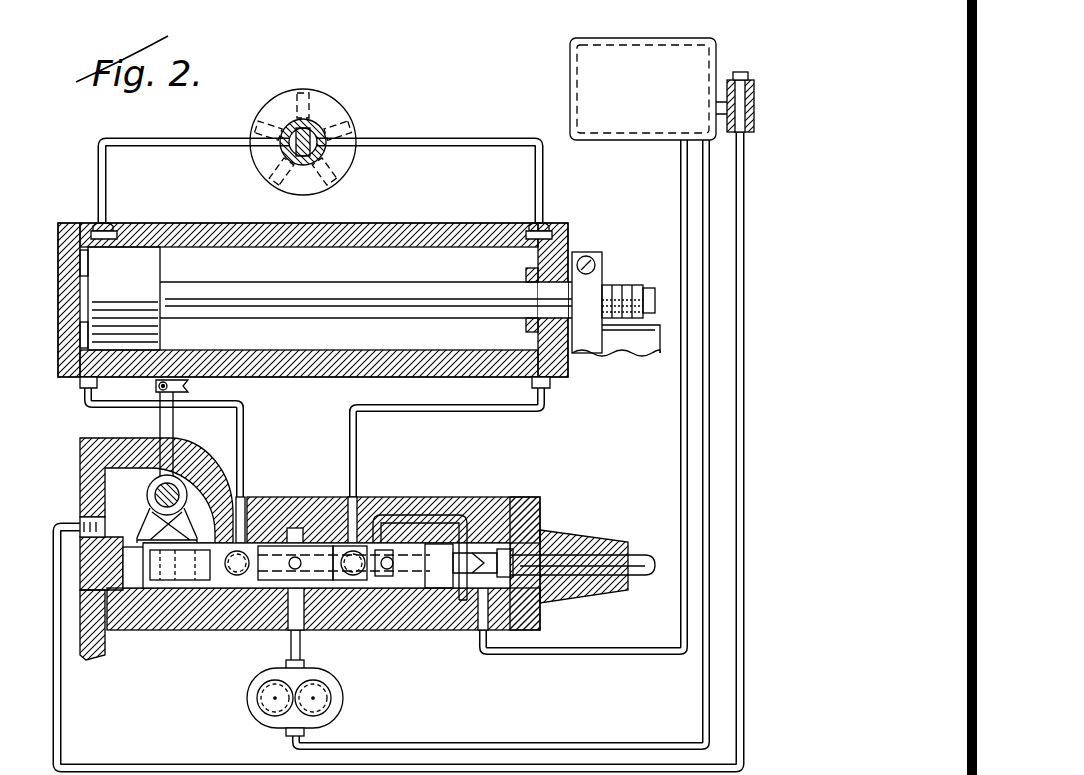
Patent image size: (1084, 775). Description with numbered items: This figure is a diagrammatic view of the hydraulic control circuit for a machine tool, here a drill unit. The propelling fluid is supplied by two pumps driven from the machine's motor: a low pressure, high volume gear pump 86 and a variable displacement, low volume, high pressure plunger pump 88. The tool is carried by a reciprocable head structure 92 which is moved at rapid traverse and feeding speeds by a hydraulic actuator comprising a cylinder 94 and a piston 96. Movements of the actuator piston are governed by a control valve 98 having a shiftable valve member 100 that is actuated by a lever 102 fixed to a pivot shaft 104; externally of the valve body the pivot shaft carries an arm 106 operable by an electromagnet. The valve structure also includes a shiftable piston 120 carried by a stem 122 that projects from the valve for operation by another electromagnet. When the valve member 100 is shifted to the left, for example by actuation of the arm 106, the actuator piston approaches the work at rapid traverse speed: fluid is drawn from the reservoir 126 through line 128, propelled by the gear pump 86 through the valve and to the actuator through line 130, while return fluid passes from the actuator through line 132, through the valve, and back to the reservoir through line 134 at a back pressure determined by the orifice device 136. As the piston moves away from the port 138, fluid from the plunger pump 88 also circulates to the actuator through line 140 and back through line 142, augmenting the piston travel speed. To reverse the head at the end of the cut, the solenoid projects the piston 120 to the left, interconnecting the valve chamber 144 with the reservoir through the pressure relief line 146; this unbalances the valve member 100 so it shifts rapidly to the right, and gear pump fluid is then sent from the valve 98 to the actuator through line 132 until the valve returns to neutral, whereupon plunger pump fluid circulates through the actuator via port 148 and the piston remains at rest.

The gear pump 86 is at (340, 708).
The plunger pump 88 is at (310, 90).
The reciprocable head structure 92 is at (627, 344).
The cylinder 94 is at (78, 378).
The piston 96 is at (118, 300).
The control valve 98 is at (500, 497).
The shiftable valve member 100 is at (368, 597).
The lever 102 is at (162, 538).
The pivot shaft 104 is at (174, 488).
The arm 106 is at (162, 423).
The shiftable piston 120 is at (456, 612).
The stem 122 is at (634, 552).
The reservoir 126 is at (574, 84).
The line 128 is at (704, 210).
The line 130 is at (246, 430).
The line 132 is at (537, 412).
The line 134 is at (192, 766).
The orifice device 136 is at (754, 128).
The port 138 is at (112, 223).
The line 140 is at (196, 140).
The line 142 is at (536, 188).
The valve chamber 144 is at (440, 544).
The pressure relief line 146 is at (592, 653).
The port 148 is at (208, 223).